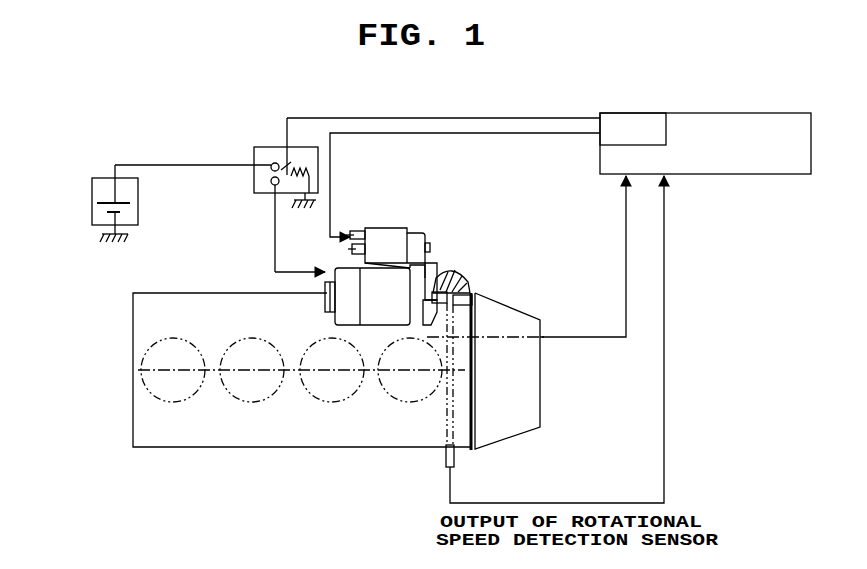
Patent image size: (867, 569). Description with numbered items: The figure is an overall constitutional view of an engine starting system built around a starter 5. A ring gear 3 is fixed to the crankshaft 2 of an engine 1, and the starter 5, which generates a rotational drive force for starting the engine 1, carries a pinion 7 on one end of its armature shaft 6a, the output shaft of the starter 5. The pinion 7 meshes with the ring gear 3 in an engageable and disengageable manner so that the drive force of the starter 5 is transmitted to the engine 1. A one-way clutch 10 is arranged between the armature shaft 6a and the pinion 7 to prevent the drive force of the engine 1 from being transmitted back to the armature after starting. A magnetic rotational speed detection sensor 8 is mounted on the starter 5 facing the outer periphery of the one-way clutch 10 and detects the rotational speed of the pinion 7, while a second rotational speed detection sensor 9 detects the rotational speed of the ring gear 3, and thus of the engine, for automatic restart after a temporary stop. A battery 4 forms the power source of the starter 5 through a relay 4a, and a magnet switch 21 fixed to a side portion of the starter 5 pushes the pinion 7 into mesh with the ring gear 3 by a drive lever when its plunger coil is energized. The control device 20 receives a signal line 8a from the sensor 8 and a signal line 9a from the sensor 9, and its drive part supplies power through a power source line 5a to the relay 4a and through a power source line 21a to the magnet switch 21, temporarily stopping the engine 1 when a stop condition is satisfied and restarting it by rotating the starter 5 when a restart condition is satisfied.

The engine 1 is at (185, 290).
The crankshaft 2 is at (256, 372).
The ring gear 3 is at (446, 412).
The battery 4 is at (92, 205).
The relay 4a is at (254, 193).
The starter 5 is at (450, 258).
The power source line 5a is at (285, 133).
The armature shaft 6a is at (450, 287).
The pinion 7 is at (443, 273).
The rotational speed detection sensor 8 is at (428, 312).
The signal line 8a is at (568, 338).
The rotational speed detection sensor 9 is at (455, 457).
The signal line 9a is at (665, 325).
The one-way clutch 10 is at (422, 265).
The control device 20 is at (713, 175).
The magnet switch 21 is at (387, 230).
The power source line 21a is at (541, 138).